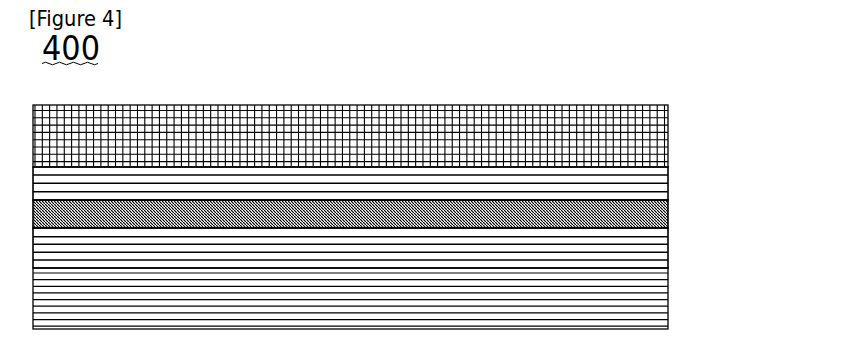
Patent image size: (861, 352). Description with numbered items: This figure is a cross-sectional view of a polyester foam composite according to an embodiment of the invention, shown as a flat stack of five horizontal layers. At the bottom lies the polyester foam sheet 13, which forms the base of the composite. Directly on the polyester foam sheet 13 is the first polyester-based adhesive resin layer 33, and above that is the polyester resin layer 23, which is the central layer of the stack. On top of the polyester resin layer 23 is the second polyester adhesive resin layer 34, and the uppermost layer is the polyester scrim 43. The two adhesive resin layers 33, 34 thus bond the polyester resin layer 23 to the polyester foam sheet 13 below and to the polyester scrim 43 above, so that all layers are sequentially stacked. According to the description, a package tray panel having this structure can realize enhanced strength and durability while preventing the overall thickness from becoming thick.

The polyester scrim 43 is at (668, 138).
The second polyester adhesive resin layer 34 is at (668, 180).
The polyester resin layer 23 is at (668, 211).
The first polyester-based adhesive resin layer 33 is at (668, 253).
The polyester foam sheet 13 is at (668, 290).